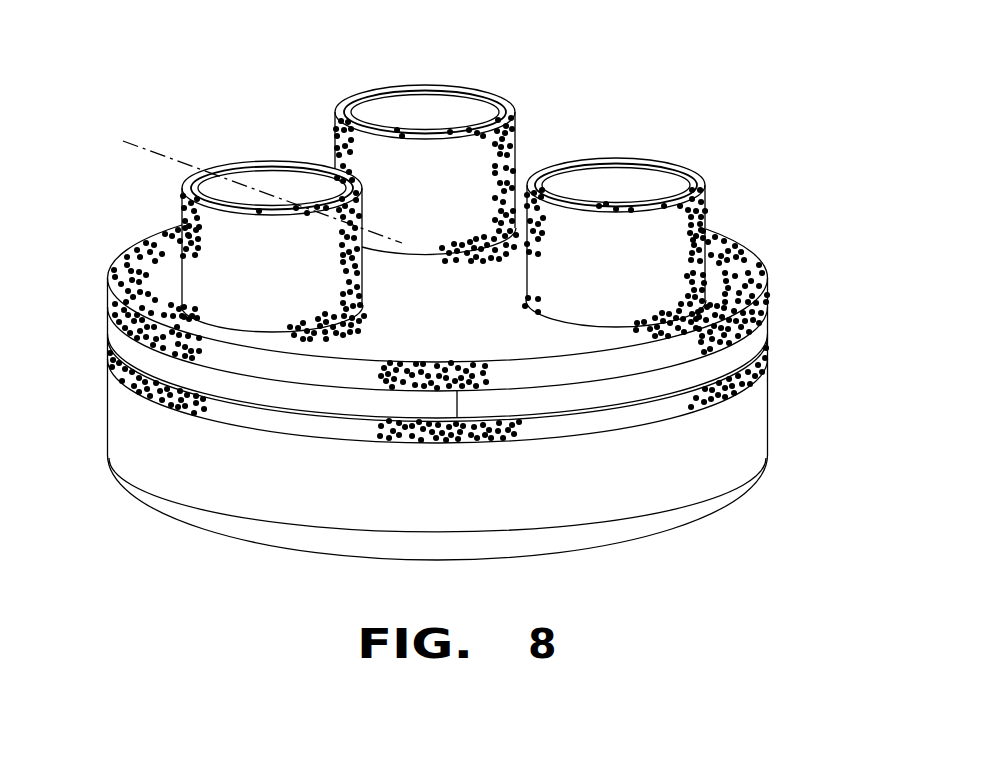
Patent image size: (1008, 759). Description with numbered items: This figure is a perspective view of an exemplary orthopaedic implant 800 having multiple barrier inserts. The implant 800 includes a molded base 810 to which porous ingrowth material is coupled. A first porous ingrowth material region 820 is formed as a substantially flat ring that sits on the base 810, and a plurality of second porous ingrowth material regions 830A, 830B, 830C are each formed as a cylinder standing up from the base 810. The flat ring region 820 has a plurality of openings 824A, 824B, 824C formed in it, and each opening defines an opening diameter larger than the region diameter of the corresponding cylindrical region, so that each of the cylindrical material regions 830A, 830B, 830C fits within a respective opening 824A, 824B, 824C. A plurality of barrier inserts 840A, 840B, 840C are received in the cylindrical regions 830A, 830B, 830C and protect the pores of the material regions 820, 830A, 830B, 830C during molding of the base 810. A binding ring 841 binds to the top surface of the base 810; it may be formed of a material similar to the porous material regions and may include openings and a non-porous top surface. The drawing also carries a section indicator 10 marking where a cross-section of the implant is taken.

The implant 800 is at (583, 107).
The base 810 is at (754, 431).
The first porous ingrowth material region 820 is at (773, 299).
The binding ring 841 is at (770, 357).
The second porous ingrowth material region 830A is at (168, 199).
The second porous ingrowth material region 830B is at (351, 89).
The second porous ingrowth material region 830C is at (715, 179).
The barrier insert 840A is at (257, 175).
The barrier insert 840B is at (425, 100).
The barrier insert 840C is at (622, 172).
The opening 824A is at (177, 302).
The opening 824B is at (500, 247).
The opening 824C is at (708, 296).
The section line 10 is at (125, 152).